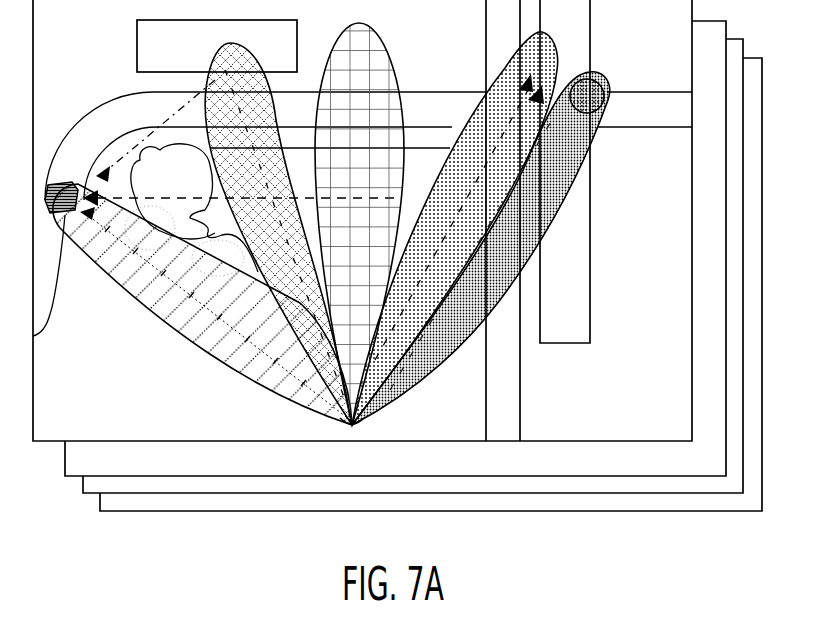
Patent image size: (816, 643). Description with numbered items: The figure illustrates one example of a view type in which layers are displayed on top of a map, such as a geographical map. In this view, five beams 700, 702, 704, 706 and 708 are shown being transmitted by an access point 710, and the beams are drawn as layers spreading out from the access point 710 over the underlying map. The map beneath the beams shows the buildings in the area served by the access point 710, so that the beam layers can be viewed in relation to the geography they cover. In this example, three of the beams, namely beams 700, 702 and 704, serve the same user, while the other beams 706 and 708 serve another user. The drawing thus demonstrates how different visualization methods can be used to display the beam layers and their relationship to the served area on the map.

The beam 700 is at (144, 312).
The beam 702 is at (210, 82).
The beam 704 is at (388, 63).
The beam 706 is at (480, 82).
The beam 708 is at (591, 143).
The access point 710 is at (306, 431).